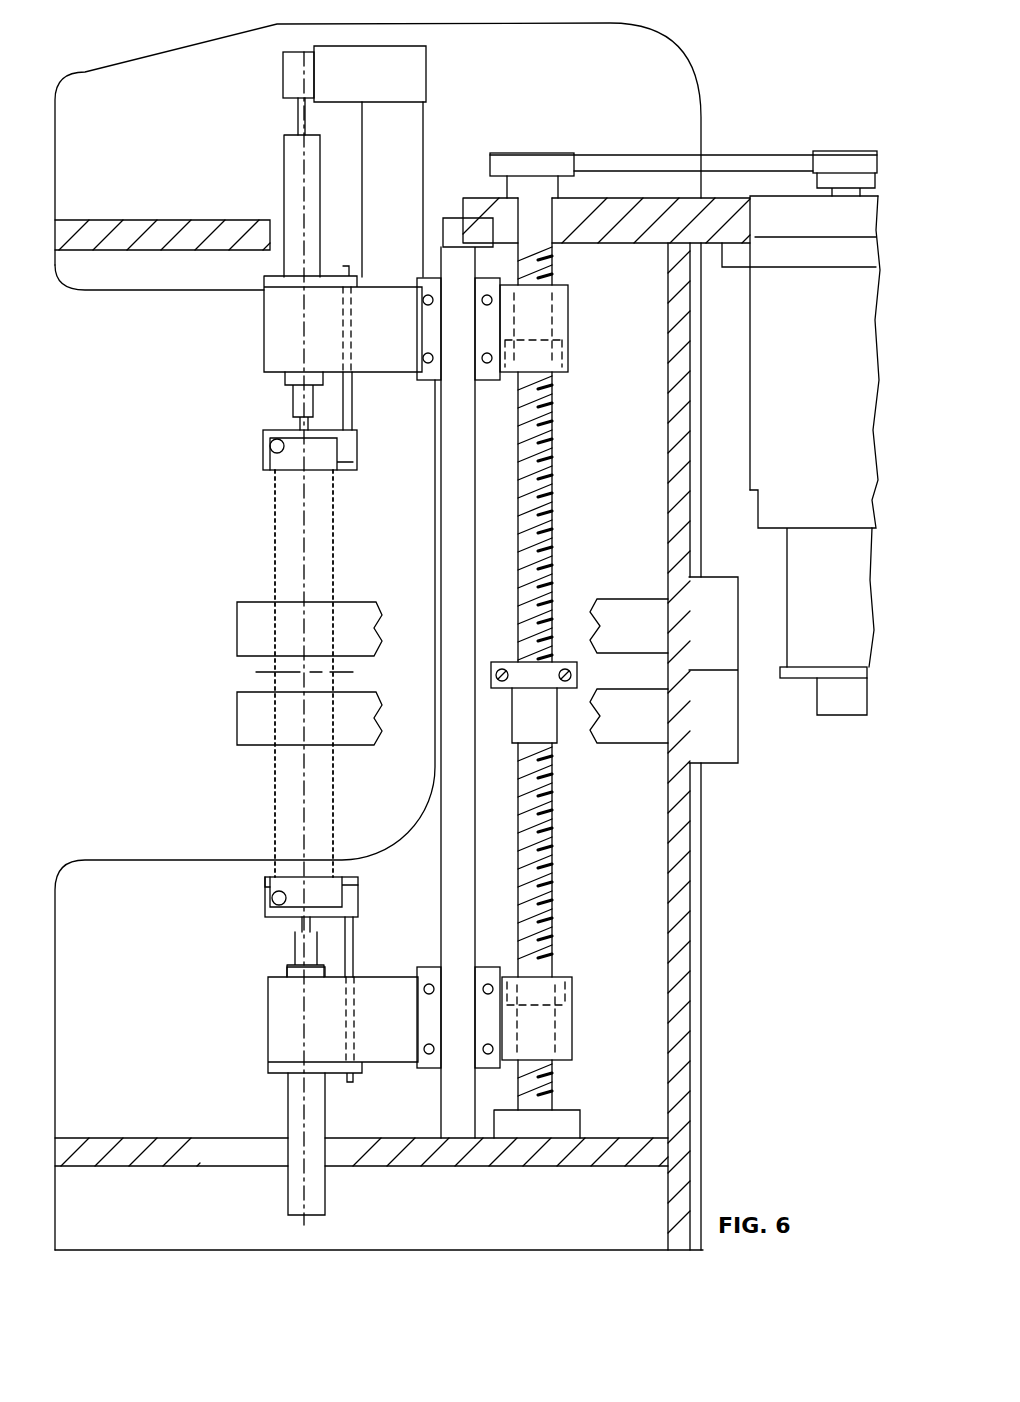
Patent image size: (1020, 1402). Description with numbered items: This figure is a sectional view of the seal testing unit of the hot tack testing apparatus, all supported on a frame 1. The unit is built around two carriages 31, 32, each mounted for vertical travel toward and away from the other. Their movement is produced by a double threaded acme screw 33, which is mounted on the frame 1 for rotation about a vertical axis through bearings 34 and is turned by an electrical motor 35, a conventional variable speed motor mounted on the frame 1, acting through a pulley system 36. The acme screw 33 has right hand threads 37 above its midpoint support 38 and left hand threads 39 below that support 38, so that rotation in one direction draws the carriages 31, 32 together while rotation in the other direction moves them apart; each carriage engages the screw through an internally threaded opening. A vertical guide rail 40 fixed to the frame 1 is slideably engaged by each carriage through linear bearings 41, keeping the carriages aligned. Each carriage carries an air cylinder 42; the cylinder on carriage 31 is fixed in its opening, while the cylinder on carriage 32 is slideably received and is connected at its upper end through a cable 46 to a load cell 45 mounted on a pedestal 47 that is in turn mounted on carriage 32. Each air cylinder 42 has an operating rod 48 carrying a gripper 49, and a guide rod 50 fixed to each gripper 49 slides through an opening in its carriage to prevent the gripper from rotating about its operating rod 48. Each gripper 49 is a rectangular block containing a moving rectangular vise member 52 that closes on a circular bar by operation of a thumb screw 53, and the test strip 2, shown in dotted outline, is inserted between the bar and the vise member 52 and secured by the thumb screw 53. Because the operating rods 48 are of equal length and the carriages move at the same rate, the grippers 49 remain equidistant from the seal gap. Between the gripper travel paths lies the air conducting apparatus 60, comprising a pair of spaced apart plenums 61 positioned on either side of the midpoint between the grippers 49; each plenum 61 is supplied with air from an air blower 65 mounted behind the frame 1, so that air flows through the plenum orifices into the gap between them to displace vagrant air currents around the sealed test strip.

The frame 1 is at (147, 860).
The test strip 2 is at (273, 548).
The carriage 31 is at (343, 1024).
The carriage 32 is at (343, 319).
The double threaded acme screw 33 is at (545, 555).
The bearings 34 is at (540, 225).
The electrical motor 35 is at (801, 455).
The pulley system 36 is at (770, 155).
The right hand threads 37 is at (540, 457).
The midpoint support 38 is at (510, 665).
The left hand threads 39 is at (545, 845).
The vertical guide rail 40 is at (452, 905).
The linear bearings 41 is at (567, 327).
The air cylinder 42 is at (284, 168).
The load cell 45 is at (283, 73).
The cable 46 is at (298, 116).
The pedestal 47 is at (370, 161).
The operating rod 48 is at (301, 422).
The gripper 49 is at (268, 433).
The guide rod 50 is at (348, 405).
The vise member 52 is at (290, 465).
The thumb screw 53 is at (271, 448).
The air conducting apparatus 60 is at (226, 668).
The plenums 61 is at (237, 630).
The air blower 65 is at (733, 724).